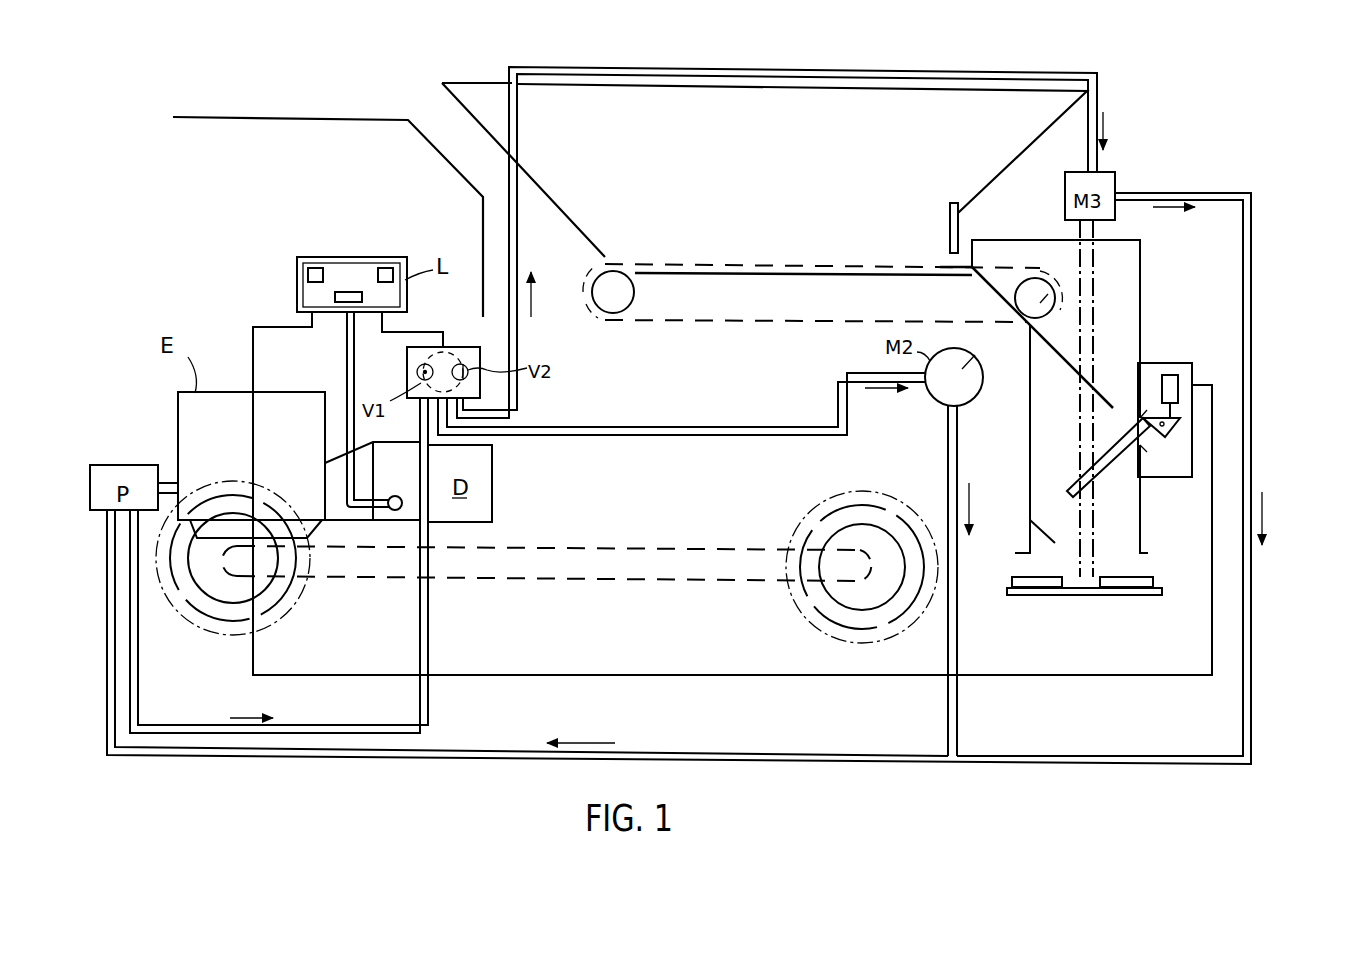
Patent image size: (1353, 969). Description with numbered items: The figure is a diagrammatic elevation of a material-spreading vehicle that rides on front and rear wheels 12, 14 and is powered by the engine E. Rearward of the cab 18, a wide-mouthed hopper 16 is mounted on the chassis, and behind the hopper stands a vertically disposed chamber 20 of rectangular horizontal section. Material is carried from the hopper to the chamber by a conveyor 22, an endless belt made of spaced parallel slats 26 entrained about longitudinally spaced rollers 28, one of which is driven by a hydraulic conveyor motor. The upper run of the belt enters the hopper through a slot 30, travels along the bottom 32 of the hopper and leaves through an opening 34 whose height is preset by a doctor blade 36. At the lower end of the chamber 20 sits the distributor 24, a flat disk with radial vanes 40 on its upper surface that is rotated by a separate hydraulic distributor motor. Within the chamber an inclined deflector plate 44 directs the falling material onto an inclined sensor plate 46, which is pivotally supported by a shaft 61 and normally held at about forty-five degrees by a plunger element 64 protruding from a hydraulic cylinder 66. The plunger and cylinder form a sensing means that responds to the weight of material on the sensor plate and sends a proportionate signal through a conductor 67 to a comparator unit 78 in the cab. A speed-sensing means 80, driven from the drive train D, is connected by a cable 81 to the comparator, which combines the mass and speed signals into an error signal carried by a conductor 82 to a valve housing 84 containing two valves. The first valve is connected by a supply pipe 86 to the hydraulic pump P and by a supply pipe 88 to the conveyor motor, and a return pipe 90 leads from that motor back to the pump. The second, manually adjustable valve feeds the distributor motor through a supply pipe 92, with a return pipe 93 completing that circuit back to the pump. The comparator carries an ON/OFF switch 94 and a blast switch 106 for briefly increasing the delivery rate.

The front wheel 12 is at (212, 622).
The rear wheel 14 is at (817, 622).
The hopper 16 is at (705, 83).
The cab 18 is at (315, 117).
The chamber 20 is at (1150, 276).
The conveyor 22 is at (731, 333).
The distributor 24 is at (1102, 602).
The slats 26 is at (665, 264).
The rollers 28 is at (605, 305).
The slot 30 is at (632, 242).
The bottom of the hopper 32 is at (733, 273).
The opening 34 is at (950, 265).
The doctor blade 36 is at (949, 226).
The vanes 40 is at (1137, 577).
The deflector plate 44 is at (1082, 360).
The sensor plate 46 is at (1107, 468).
The shaft 61 is at (1161, 437).
The plunger element 64 is at (1175, 412).
The hydraulic cylinder 66 is at (1167, 375).
The conductor 67 is at (687, 677).
The comparator unit 78 is at (329, 256).
The speed-sensing means 80 is at (405, 483).
The cable 81 is at (346, 379).
The conductor 82 is at (407, 333).
The valve housing 84 is at (407, 376).
The supply pipe 86 is at (428, 637).
The supply pipe 88 is at (562, 435).
The return pipe 90 is at (947, 718).
The supply pipe 92 is at (519, 250).
The return pipe 93 is at (1243, 707).
The ON/OFF switch 94 is at (351, 291).
The blast switch 106 is at (303, 278).